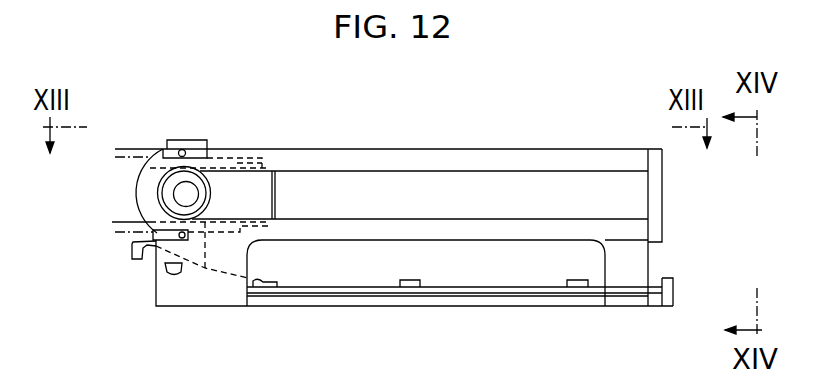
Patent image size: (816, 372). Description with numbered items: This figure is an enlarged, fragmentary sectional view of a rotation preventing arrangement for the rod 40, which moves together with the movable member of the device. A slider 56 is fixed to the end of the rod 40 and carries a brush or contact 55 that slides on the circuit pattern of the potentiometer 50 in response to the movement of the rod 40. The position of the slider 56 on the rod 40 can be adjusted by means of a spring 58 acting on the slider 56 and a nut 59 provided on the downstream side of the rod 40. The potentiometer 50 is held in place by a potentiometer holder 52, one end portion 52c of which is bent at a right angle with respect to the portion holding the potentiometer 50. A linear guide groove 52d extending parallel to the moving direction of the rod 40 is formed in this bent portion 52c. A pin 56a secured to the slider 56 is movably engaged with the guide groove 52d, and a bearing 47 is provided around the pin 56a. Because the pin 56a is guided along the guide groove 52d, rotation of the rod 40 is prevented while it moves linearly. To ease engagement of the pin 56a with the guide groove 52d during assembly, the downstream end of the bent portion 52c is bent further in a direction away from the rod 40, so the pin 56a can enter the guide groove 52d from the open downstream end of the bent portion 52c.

The rod 40 is at (122, 198).
The bearing 47 is at (277, 207).
The potentiometer 50 is at (483, 287).
The potentiometer holder 52 is at (356, 313).
The bent portion 52c is at (418, 230).
The linear guide groove 52d is at (543, 172).
The contact 55 is at (254, 278).
The slider 56 is at (187, 142).
The pin 56a is at (190, 192).
The spring 58 is at (135, 150).
The nut 59 is at (233, 160).